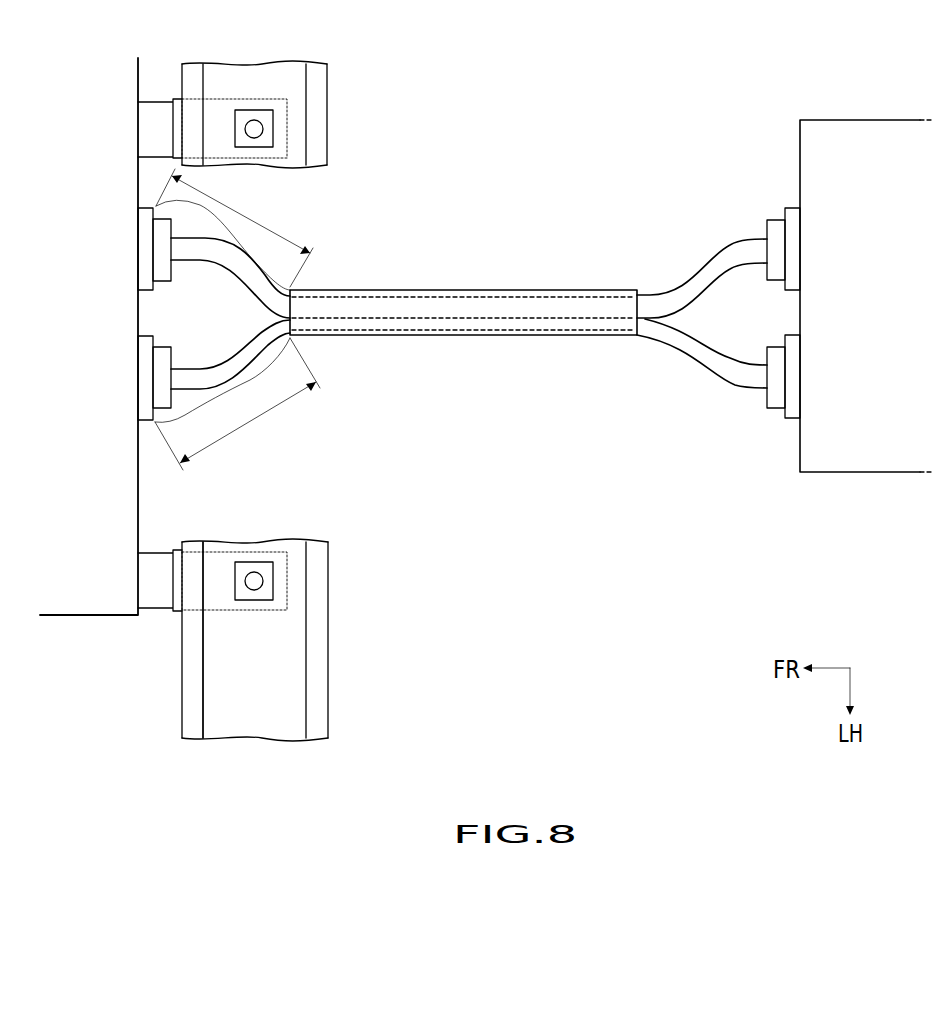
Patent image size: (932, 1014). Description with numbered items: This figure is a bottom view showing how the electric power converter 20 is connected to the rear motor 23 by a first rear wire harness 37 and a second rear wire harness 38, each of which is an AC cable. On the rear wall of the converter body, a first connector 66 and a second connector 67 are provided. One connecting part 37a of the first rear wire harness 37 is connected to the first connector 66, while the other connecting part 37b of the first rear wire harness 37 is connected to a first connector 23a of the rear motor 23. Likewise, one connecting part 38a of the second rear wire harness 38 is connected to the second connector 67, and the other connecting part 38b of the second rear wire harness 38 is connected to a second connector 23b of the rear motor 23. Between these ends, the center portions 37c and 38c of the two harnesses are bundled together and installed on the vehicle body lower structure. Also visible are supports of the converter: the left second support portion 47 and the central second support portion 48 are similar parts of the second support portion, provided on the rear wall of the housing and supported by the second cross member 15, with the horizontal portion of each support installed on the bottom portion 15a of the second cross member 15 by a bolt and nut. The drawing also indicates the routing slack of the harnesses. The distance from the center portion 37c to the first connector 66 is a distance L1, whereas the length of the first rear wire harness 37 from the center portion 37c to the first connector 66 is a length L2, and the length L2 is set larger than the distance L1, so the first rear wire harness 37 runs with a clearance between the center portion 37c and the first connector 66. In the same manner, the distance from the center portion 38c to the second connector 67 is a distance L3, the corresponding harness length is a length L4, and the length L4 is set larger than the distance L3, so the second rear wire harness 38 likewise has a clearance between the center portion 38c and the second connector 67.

The second cross member 15 is at (318, 707).
The bottom portion 15a is at (259, 722).
The electric power converter 20 is at (92, 617).
The rear motor 23 is at (857, 119).
The first connector 23a is at (793, 400).
The second connector 23b is at (793, 218).
The first rear wire harness 37 is at (220, 365).
The one connecting part 37a is at (150, 380).
The other connecting part 37b is at (777, 413).
The center portion 37c is at (488, 335).
The second rear wire harness 38 is at (213, 267).
The one connecting part 38a is at (148, 245).
The other connecting part 38b is at (782, 223).
The center portion 38c is at (488, 290).
The left second support portion 47 is at (287, 590).
The central second support portion 48 is at (250, 100).
The first connector 66 is at (145, 395).
The second connector 67 is at (147, 219).
The distance L1 is at (220, 440).
The length L2 is at (238, 388).
The distance L3 is at (280, 234).
The length L4 is at (237, 240).